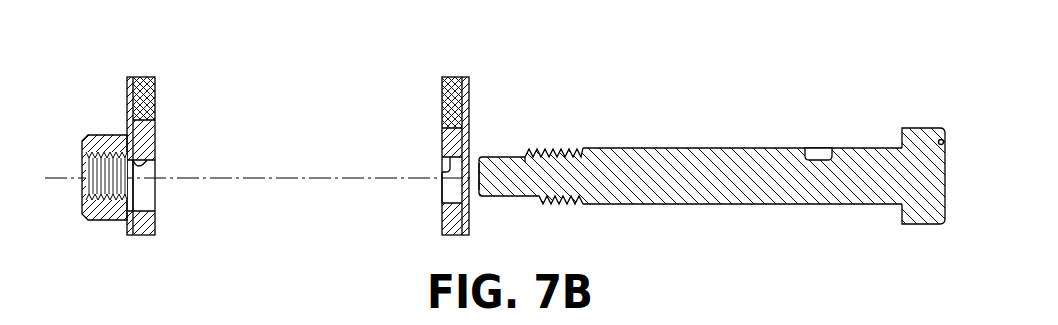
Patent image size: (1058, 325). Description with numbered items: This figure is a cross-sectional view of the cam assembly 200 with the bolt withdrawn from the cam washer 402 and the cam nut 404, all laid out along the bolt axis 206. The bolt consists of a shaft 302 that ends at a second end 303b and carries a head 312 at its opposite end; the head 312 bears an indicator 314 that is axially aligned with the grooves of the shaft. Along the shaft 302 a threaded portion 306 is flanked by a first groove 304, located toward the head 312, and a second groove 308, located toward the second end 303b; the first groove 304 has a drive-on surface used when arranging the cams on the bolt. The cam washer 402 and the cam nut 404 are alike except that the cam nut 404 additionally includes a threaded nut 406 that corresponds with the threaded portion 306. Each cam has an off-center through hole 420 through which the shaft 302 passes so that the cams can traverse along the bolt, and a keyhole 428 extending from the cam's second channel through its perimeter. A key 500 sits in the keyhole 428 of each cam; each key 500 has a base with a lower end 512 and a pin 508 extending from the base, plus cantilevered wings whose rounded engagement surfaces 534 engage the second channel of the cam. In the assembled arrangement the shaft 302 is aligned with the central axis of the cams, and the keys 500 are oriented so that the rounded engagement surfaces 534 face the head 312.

The cam assembly 200 is at (117, 59).
The bolt axis 206 is at (80, 178).
The shaft 302 is at (697, 152).
The second end 303b is at (478, 188).
The first groove 304 is at (817, 151).
The threaded portion 306 is at (562, 148).
The second groove 308 is at (503, 156).
The head 312 is at (907, 127).
The indicator 314 is at (944, 141).
The cam washer 402 is at (447, 61).
The cam nut 404 is at (141, 63).
The threaded nut 406 is at (112, 219).
The through hole 420 is at (147, 201).
The keyhole 428 is at (154, 115).
The key 500 is at (145, 77).
The pin 508 is at (153, 92).
The lower end 512 is at (150, 190).
The rounded engagement surface 534 is at (155, 160).